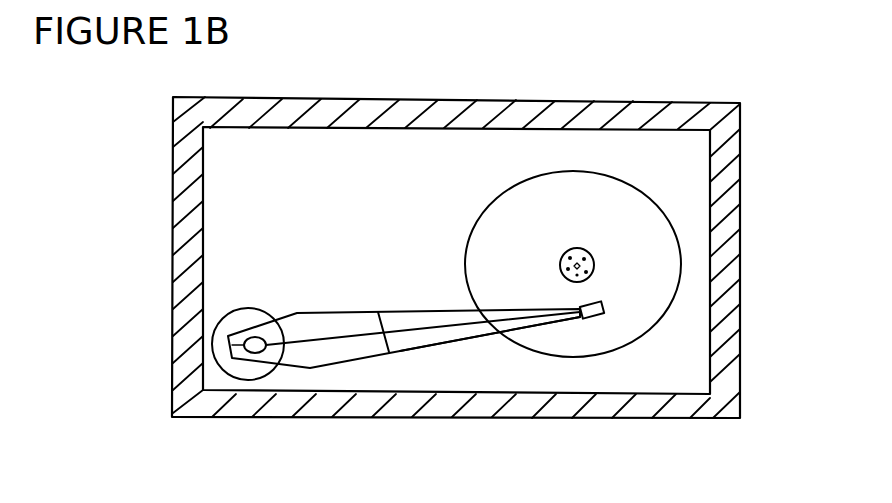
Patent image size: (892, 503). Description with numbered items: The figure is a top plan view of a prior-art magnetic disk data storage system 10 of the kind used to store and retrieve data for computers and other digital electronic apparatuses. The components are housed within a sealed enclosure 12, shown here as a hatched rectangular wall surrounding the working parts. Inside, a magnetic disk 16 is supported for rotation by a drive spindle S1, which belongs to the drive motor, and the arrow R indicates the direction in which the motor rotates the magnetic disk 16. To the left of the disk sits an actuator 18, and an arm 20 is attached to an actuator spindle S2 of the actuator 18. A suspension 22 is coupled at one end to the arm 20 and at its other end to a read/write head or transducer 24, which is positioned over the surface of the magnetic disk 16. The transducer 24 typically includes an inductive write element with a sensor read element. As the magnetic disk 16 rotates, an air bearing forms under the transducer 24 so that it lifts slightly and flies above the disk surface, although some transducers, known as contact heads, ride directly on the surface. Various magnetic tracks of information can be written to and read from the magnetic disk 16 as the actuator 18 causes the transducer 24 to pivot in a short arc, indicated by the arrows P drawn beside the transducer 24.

The assembly 10 is at (660, 56).
The sealed enclosure 12 is at (380, 407).
The magnetic disk 16 is at (582, 217).
The actuator 18 is at (242, 318).
The arm 20 is at (338, 323).
The suspension 22 is at (449, 332).
The transducer 24 is at (603, 303).
The drive spindle S1 is at (590, 251).
The actuator spindle S2 is at (266, 346).
The arrow R is at (642, 173).
The arrows P is at (585, 298).